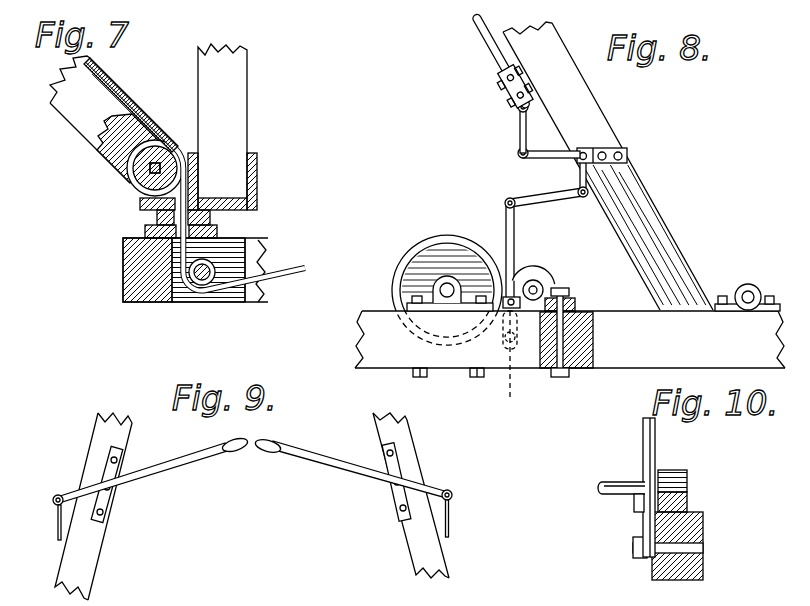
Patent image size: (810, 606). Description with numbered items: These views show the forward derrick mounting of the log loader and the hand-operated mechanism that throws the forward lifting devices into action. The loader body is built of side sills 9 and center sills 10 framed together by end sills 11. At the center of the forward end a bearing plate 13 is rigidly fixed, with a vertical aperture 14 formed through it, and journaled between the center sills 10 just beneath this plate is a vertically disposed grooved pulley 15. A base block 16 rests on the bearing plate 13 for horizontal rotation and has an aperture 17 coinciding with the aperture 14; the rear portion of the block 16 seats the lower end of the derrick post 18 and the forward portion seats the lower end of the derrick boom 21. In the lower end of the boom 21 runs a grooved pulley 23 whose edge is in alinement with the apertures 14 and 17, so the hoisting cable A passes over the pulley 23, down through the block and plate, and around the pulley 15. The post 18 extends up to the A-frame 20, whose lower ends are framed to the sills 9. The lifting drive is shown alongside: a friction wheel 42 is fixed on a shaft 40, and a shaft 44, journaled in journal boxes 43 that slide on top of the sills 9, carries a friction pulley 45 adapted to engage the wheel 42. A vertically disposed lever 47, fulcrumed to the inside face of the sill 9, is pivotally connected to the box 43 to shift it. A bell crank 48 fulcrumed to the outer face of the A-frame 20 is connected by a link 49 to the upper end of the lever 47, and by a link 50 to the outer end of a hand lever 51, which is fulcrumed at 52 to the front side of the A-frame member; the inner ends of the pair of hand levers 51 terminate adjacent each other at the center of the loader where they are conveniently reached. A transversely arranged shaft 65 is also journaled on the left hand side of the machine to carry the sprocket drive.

In FIG. 7, the hoisting cable A is at (90, 60).
In FIG. 8, the side sills 9 is at (570, 344).
In FIG. 10, the side sills 9 is at (690, 523).
In FIG. 7, the center sills 10 is at (257, 296).
In FIG. 8, the center sills 10 is at (504, 280).
In FIG. 7, the end sills 11 is at (133, 276).
In FIG. 7, the bearing plate 13 is at (218, 230).
In FIG. 7, the aperture 14 is at (148, 232).
In FIG. 7, the grooved pulley 15 is at (196, 290).
In FIG. 7, the base block 16 is at (257, 181).
In FIG. 7, the aperture 17 is at (140, 204).
In FIG. 7, the derrick post 18 is at (232, 94).
In FIG. 8, the A-frame 20 is at (586, 119).
In FIG. 9, the A-frame 20 is at (90, 556).
In FIG. 7, the derrick boom 21 is at (82, 117).
In FIG. 7, the grooved pulley 23 is at (157, 152).
In FIG. 8, the shaft 40 is at (440, 290).
In FIG. 8, the friction wheel 42 is at (424, 244).
In FIG. 8, the journal box 43 is at (546, 282).
In FIG. 10, the journal box 43 is at (683, 481).
In FIG. 10, the shaft 44 is at (612, 493).
In FIG. 8, the friction pulley 45 is at (556, 280).
In FIG. 8, the lever 47 is at (514, 250).
In FIG. 10, the lever 47 is at (643, 447).
In FIG. 8, the bell crank 48 is at (550, 158).
In FIG. 8, the link 49 is at (545, 198).
In FIG. 8, the link 50 is at (518, 124).
In FIG. 9, the link 50 is at (58, 527).
In FIG. 8, the hand lever 51 is at (486, 44).
In FIG. 9, the hand lever 51 is at (163, 470).
In FIG. 9, the fulcrum 52 is at (108, 481).
In FIG. 8, the shaft 65 is at (748, 290).